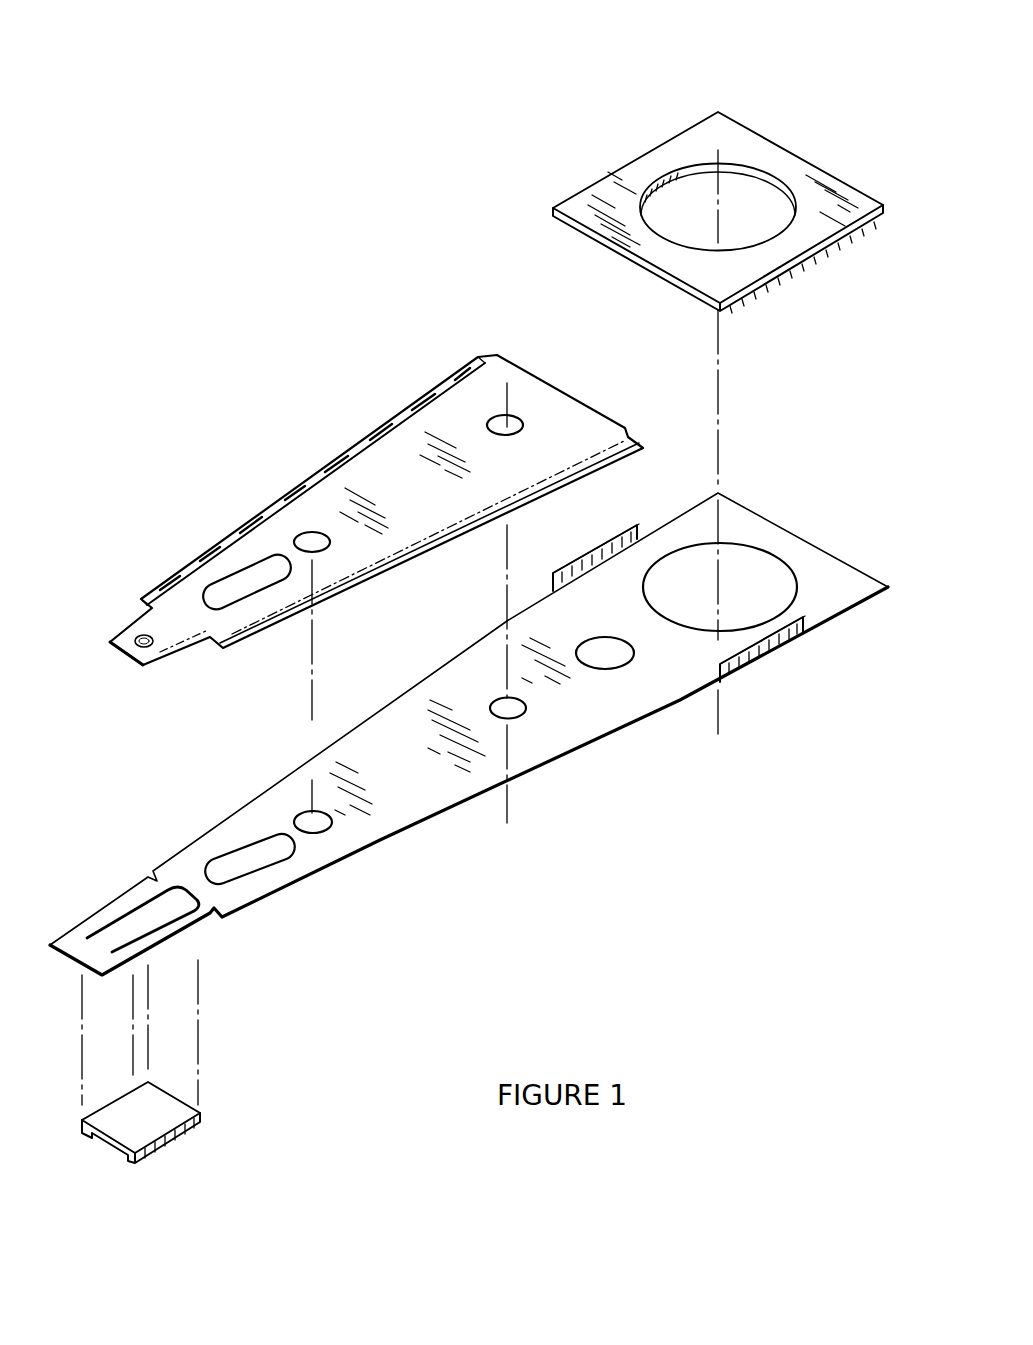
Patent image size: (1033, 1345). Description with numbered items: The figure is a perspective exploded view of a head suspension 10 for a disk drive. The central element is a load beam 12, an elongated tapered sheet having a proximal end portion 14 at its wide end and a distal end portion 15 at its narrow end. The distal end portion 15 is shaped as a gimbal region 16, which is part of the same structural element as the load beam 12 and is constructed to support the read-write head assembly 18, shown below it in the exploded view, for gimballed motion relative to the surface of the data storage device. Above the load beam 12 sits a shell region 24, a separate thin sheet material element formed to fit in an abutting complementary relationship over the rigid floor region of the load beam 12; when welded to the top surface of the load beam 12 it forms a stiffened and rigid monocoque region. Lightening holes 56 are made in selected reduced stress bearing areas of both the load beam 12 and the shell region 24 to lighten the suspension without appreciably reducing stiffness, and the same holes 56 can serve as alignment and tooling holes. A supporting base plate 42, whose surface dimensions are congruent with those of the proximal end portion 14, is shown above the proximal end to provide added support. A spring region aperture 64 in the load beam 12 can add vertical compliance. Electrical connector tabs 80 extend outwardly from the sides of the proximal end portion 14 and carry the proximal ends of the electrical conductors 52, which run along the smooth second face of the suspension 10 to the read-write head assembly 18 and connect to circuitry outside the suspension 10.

The head suspension 10 is at (417, 187).
The load beam 12 is at (408, 778).
The proximal end portion 14 is at (772, 690).
The distal end portion 15 is at (217, 978).
The gimbal region 16 is at (136, 928).
The read-write head assembly 18 is at (162, 1107).
The shell region 24 is at (347, 426).
The supporting base plate 42 is at (690, 138).
The electrical conductors 52 is at (797, 637).
The lightening holes 56 is at (497, 418).
The spring region apertures 64 is at (616, 656).
The electrical connector tabs 80 is at (753, 665).